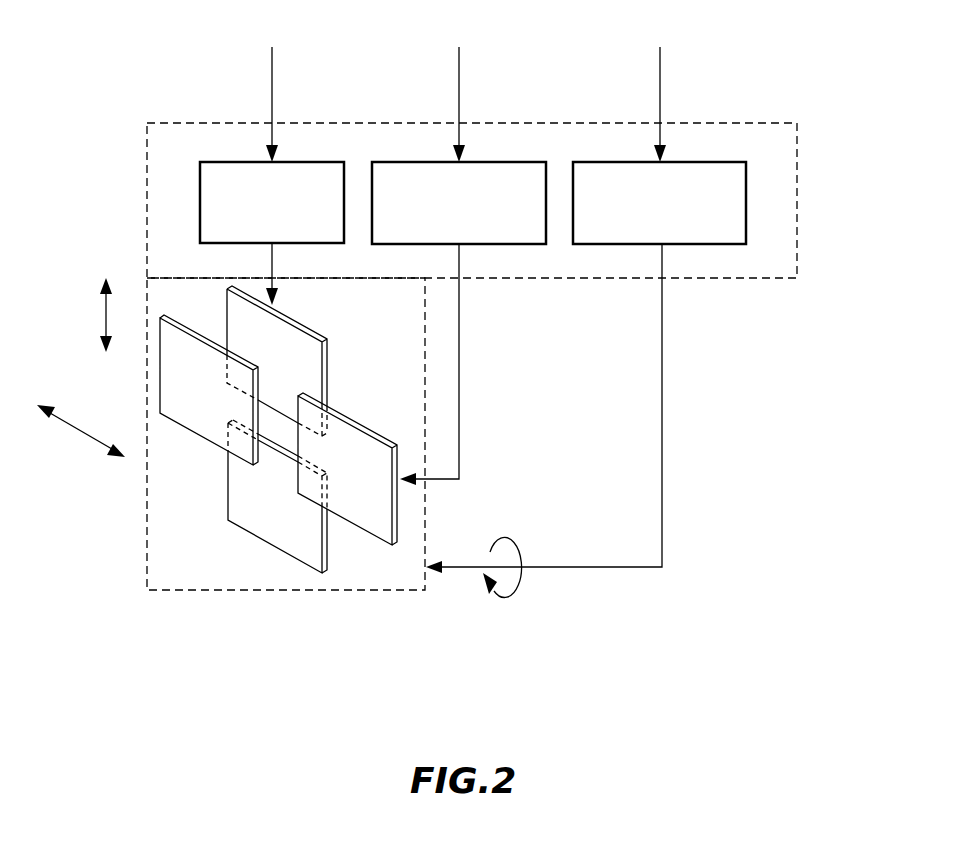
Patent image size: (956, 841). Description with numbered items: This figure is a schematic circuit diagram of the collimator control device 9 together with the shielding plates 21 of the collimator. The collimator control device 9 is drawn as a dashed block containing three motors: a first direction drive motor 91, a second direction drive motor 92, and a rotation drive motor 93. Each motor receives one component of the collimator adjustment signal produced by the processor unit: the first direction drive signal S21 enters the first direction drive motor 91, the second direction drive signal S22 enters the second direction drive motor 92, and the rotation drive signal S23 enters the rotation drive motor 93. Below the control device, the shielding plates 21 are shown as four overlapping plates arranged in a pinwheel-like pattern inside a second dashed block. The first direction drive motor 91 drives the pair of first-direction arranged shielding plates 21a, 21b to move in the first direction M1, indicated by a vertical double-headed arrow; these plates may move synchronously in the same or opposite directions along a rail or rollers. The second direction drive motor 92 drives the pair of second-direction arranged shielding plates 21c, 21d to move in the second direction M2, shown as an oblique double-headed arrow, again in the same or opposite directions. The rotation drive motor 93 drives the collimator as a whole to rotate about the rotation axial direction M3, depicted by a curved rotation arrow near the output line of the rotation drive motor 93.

The collimator control device 9 is at (160, 152).
The first direction drive motor 91 is at (200, 199).
The second direction drive motor 92 is at (517, 227).
The rotation drive motor 93 is at (730, 229).
The shielding plates 21 is at (162, 563).
The first-direction arranged shielding plate 21a is at (318, 368).
The first-direction arranged shielding plate 21b is at (240, 517).
The second-direction arranged shielding plate 21c is at (168, 377).
The second-direction arranged shielding plate 21d is at (382, 515).
The first direction drive signal S21 is at (272, 82).
The second direction drive signal S22 is at (458, 82).
The rotation drive signal S23 is at (658, 83).
The first direction M1 is at (106, 312).
The second direction M2 is at (78, 433).
The rotation axial direction M3 is at (515, 595).